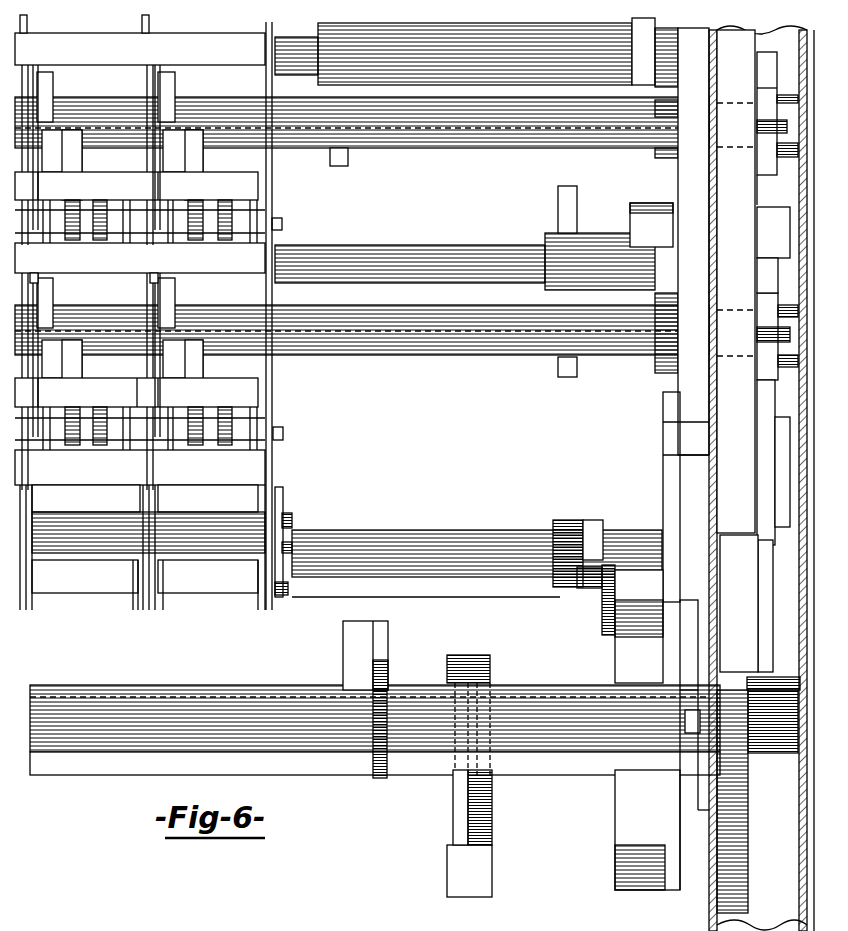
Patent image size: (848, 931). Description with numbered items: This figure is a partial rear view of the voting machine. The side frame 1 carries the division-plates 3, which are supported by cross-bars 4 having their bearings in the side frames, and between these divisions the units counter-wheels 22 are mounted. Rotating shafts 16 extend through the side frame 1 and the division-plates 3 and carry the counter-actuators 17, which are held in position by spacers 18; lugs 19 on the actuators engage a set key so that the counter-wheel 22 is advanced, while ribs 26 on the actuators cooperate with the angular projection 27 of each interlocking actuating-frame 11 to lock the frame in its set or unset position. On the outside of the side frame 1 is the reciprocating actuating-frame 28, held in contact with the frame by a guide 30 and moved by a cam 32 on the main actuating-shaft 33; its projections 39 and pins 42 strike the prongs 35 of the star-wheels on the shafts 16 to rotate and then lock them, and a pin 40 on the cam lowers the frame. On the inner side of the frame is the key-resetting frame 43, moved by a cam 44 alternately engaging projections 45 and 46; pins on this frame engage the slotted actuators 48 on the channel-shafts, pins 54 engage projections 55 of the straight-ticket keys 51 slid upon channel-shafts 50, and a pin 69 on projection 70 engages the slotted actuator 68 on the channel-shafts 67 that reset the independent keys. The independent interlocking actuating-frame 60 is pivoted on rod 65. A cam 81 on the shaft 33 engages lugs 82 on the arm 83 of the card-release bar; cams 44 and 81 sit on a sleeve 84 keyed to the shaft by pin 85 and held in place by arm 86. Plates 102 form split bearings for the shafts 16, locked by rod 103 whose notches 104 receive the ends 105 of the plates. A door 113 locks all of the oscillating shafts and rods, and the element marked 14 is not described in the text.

The side frame 1 is at (717, 440).
The division-plates 3 is at (140, 20).
The cross-bars 4 is at (208, 276).
The interlocking actuating-frames 11 is at (173, 290).
The post 14 is at (165, 215).
The rotating shafts 16 is at (480, 148).
The counter-actuators 17 is at (37, 72).
The spacers 18 is at (362, 330).
The lugs 19 is at (148, 366).
The units counter-wheels 22 is at (140, 338).
The ribs 26 is at (53, 100).
The angular projection 27 is at (72, 160).
The reciprocating actuating-frame 28 is at (737, 281).
The guide 30 is at (763, 612).
The cam 32 is at (738, 835).
The main actuating-shaft 33 is at (228, 700).
The prongs 35 is at (757, 160).
The projections 39 is at (750, 497).
The pin 40 is at (760, 753).
The pins 42 is at (757, 155).
The key-resetting frame 43 is at (663, 385).
The cam 44 is at (625, 806).
The projection 45 is at (630, 660).
The projection 46 is at (615, 875).
The slotted actuators 48 is at (655, 155).
The channel-shafts 50 is at (428, 245).
The straight-ticket keys 51 is at (558, 208).
The pins 54 is at (655, 95).
The projections 55 is at (645, 203).
The independent interlocking actuating-frame 60 is at (142, 547).
The rod 65 is at (287, 597).
The channel-shafts 67 is at (393, 540).
The slotted actuator 68 is at (566, 520).
The pin 69 is at (577, 590).
The projection 70 is at (602, 622).
The cam 81 is at (453, 806).
The lugs 82 is at (472, 655).
The arm 83 is at (492, 812).
The sleeve 84 is at (540, 695).
The pin 85 is at (685, 722).
The arm 86 is at (388, 665).
The plate 102 is at (272, 178).
The rod 103 is at (222, 506).
The notches 104 is at (292, 530).
The ends 105 is at (283, 505).
The door 113 is at (788, 892).